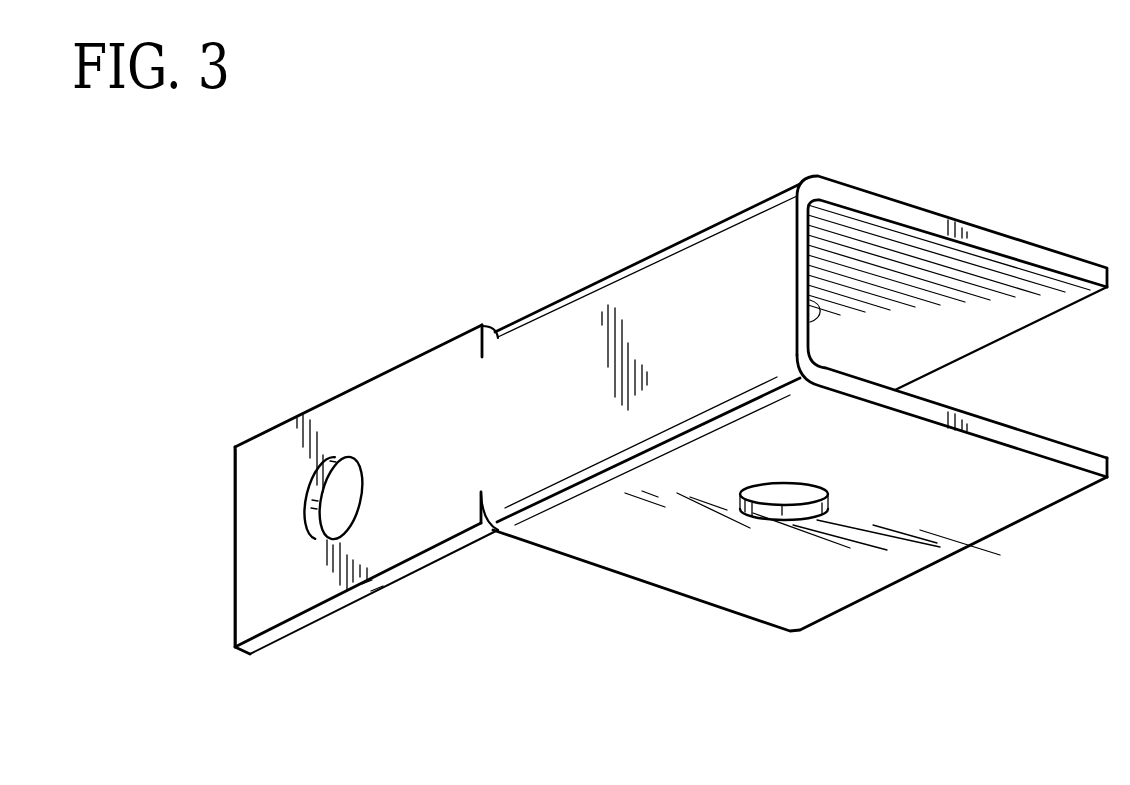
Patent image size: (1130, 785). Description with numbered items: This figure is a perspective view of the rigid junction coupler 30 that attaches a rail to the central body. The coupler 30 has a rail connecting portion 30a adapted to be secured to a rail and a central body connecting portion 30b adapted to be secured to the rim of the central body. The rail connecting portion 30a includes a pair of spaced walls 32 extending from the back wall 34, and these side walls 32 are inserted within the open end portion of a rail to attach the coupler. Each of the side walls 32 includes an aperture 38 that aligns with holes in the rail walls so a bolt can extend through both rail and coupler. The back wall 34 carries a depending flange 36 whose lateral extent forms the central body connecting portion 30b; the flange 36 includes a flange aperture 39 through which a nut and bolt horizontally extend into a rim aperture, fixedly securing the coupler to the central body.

The junction coupler 30 is at (427, 233).
The rail connecting portion 30a is at (660, 287).
The central body connecting portion 30b is at (402, 397).
The spaced walls 32 is at (927, 219).
The back wall 34 is at (523, 430).
The depending flange 36 is at (278, 442).
The aperture 38 is at (808, 502).
The flange aperture 39 is at (315, 525).